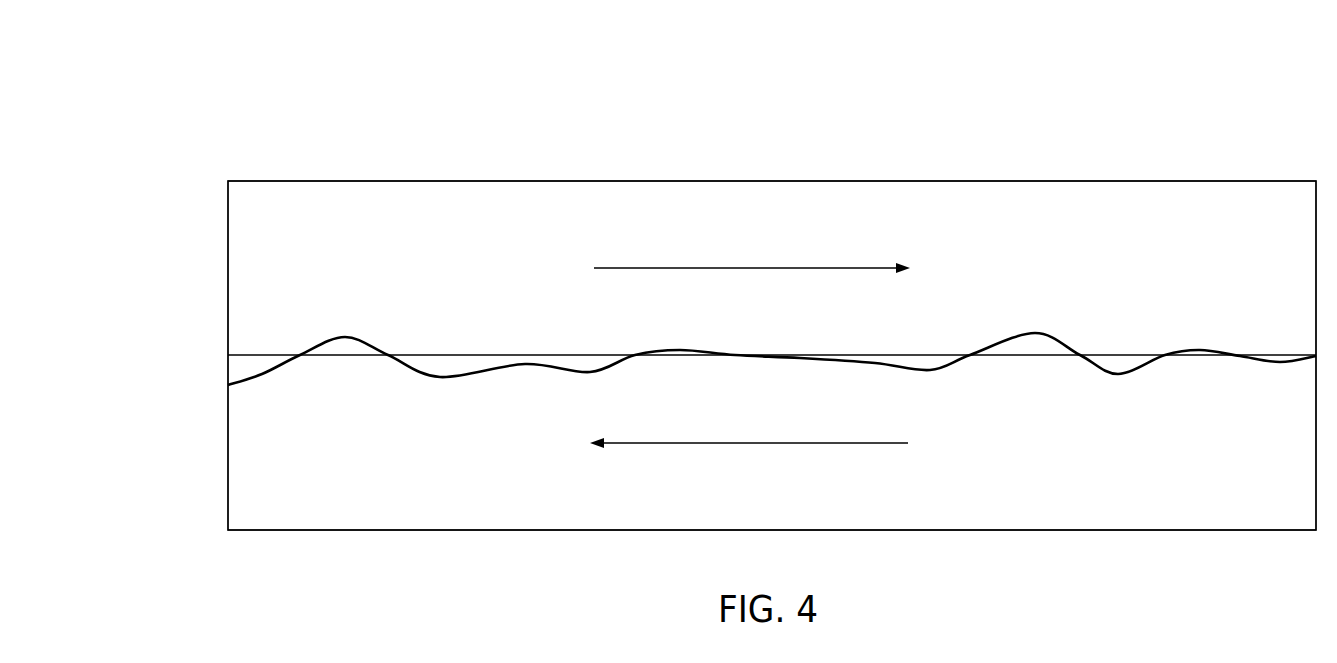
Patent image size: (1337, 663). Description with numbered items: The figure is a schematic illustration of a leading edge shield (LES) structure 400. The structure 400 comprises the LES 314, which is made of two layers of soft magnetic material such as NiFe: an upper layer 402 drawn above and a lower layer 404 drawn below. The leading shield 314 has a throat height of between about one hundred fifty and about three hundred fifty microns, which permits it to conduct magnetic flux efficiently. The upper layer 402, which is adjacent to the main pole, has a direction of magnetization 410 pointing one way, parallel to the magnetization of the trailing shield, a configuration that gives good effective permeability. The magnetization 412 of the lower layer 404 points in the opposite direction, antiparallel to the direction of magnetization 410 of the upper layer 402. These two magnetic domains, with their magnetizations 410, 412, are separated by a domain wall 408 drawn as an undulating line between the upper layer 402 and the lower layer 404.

The LES structure 400 is at (218, 86).
The upper layer 402 is at (1260, 262).
The lower layer 404 is at (1260, 453).
The leading edge shield 314 is at (200, 181).
The domain wall 408 is at (1062, 333).
The direction of magnetization of the upper layer 410 is at (725, 268).
The magnetization of the lower layer 412 is at (723, 443).